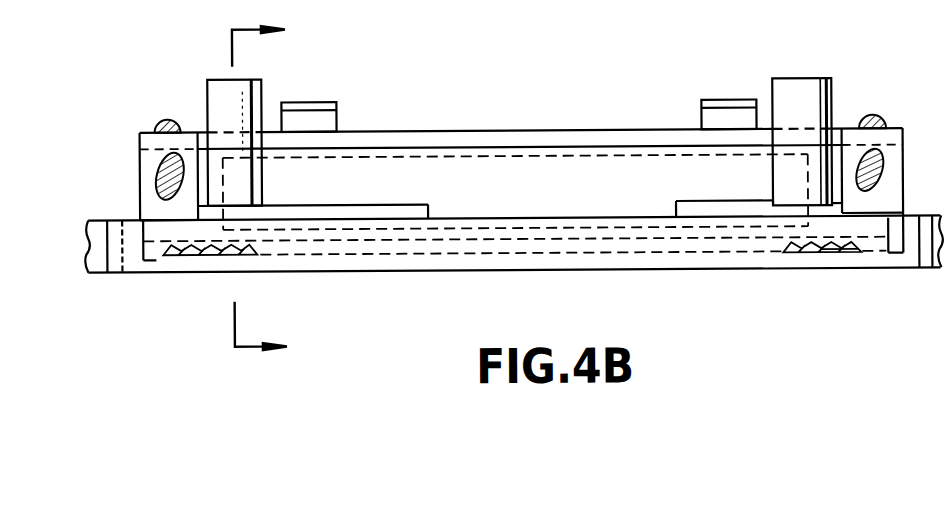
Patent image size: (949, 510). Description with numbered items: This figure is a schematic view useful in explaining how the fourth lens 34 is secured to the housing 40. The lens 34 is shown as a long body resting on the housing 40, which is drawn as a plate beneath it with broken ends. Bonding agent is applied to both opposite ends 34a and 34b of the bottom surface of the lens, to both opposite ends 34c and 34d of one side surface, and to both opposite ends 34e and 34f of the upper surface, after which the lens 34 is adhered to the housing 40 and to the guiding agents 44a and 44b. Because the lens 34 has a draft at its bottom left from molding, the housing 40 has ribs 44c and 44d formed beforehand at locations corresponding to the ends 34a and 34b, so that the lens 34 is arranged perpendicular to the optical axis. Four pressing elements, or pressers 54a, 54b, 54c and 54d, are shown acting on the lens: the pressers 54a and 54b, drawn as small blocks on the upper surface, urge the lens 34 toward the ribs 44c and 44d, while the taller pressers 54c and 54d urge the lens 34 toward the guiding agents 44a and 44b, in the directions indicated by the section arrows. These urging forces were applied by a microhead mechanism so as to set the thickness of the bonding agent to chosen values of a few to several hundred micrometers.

The fourth lens 34 is at (522, 130).
The end of bottom surface of fourth lens 34a is at (802, 249).
The end of bottom surface of fourth lens 34b is at (200, 254).
The end of side surface of fourth lens 34c is at (884, 162).
The end of side surface of fourth lens 34d is at (157, 171).
The end of upper surface of fourth lens 34e is at (872, 118).
The end of upper surface of fourth lens 34f is at (170, 116).
The housing 40 is at (594, 270).
The guiding agent 44a is at (889, 256).
The guiding agent 44b is at (155, 201).
The rib 44c is at (840, 252).
The rib 44d is at (150, 258).
The presser 54a is at (722, 103).
The presser 54b is at (372, 82).
The presser 54c is at (805, 92).
The presser 54d is at (262, 90).